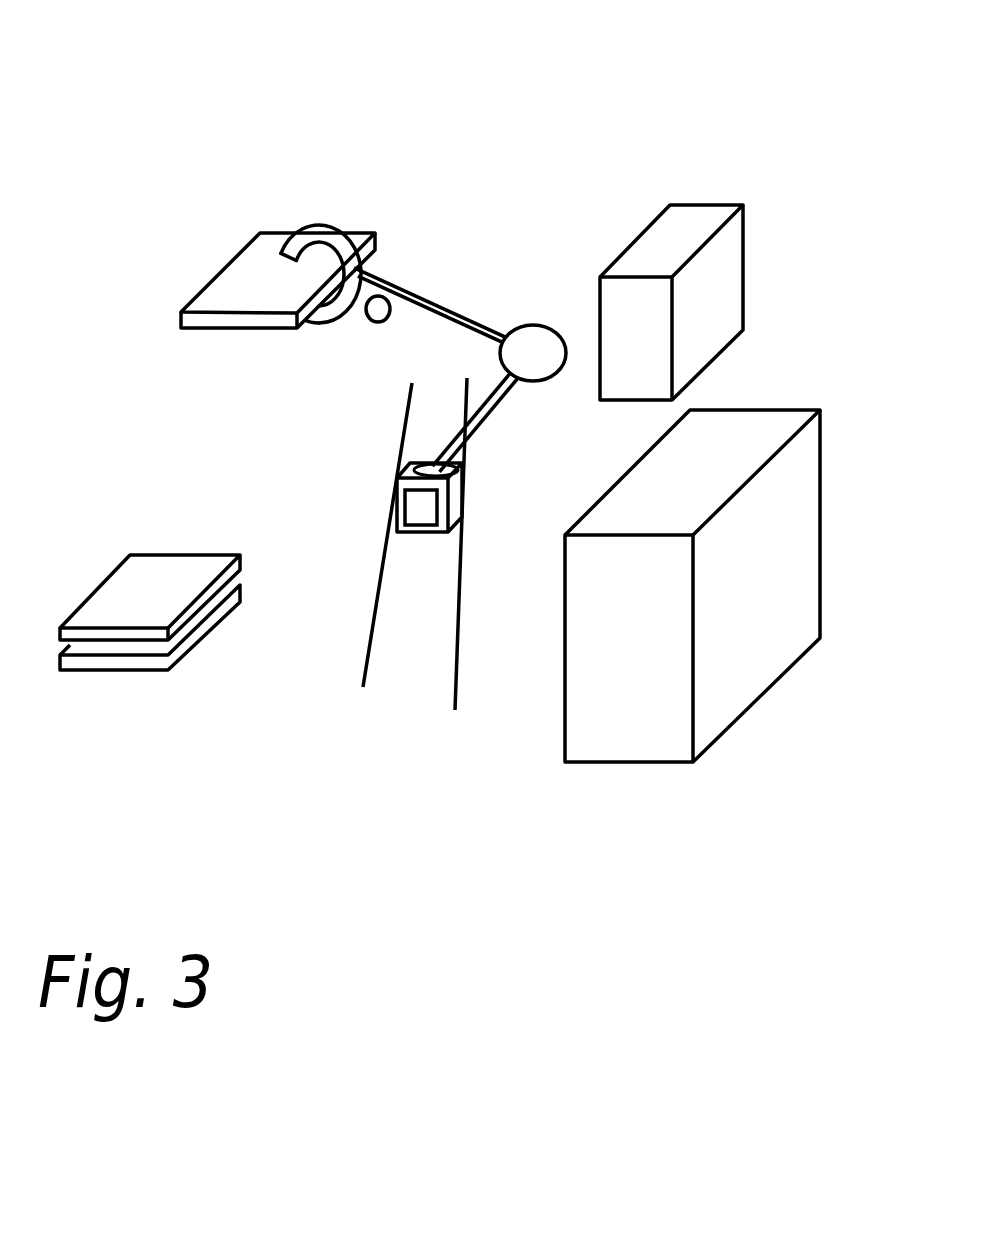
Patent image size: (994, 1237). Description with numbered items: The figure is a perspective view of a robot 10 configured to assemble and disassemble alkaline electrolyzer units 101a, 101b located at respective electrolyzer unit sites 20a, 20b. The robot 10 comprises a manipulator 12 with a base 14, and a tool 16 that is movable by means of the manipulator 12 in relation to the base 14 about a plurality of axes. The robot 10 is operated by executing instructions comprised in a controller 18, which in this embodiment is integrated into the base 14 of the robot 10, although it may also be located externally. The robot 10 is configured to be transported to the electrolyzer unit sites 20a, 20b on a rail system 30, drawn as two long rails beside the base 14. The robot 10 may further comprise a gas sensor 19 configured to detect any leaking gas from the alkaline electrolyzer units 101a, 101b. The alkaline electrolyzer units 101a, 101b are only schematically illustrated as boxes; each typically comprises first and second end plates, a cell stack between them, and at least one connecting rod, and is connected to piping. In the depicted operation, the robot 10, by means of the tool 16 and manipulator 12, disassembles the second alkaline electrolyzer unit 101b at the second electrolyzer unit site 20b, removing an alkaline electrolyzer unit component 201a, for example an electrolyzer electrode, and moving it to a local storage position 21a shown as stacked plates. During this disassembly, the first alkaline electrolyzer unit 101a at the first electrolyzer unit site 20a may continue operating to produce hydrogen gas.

The robot 10 is at (492, 170).
The manipulator 12 is at (497, 328).
The base 14 is at (460, 517).
The controller 18 is at (413, 534).
The tool 16 is at (342, 232).
The gas sensor 19 is at (373, 320).
The alkaline electrolyzer unit component 201a is at (257, 270).
The first electrolyzer unit site 20a is at (820, 390).
The second electrolyzer unit site 20b is at (737, 185).
The first alkaline electrolyzer unit 101a is at (797, 567).
The second alkaline electrolyzer unit 101b is at (733, 310).
The local storage position 21a is at (126, 697).
The rail system 30 is at (358, 722).